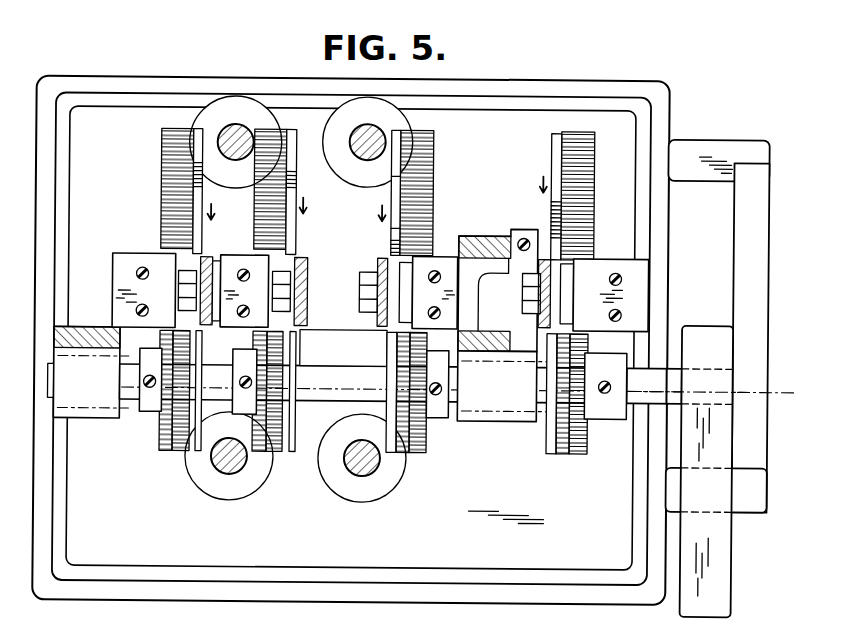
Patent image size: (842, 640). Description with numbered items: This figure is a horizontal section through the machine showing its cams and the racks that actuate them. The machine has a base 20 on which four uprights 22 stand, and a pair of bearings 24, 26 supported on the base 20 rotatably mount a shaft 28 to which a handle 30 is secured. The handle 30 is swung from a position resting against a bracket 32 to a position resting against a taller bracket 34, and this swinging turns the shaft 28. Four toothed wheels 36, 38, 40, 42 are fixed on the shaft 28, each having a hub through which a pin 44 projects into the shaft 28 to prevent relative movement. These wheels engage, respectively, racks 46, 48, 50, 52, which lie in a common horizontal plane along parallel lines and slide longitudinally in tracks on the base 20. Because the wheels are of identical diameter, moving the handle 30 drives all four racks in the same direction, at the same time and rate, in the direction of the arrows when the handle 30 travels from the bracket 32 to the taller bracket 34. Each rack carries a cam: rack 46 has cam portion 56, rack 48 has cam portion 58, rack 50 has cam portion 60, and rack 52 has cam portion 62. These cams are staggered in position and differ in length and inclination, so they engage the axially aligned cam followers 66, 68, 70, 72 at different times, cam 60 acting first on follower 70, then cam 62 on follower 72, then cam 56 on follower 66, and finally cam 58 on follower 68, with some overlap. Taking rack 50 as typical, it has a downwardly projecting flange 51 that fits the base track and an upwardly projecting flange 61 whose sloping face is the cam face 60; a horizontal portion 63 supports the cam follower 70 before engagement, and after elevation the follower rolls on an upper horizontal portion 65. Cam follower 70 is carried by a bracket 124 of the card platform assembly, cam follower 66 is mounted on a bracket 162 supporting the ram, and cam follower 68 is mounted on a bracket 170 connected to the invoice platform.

The base 20 is at (116, 600).
The uprights 22 is at (236, 126).
The bearing 24 is at (100, 412).
The bearing 26 is at (497, 412).
The shaft 28 is at (636, 402).
The handle 30 is at (728, 585).
The bracket 32 is at (762, 494).
The taller bracket 34 is at (760, 166).
The toothed wheel 36 is at (160, 432).
The toothed wheel 38 is at (268, 448).
The toothed wheel 40 is at (418, 438).
The toothed wheel 42 is at (578, 440).
The pin 44 is at (143, 383).
The rack 46 is at (165, 162).
The rack 48 is at (286, 232).
The rack 50 is at (431, 183).
The downwardly projecting flange 51 is at (396, 360).
The rack 52 is at (592, 192).
The cam portion 56 is at (201, 190).
The cam portion 58 is at (295, 182).
The cam portion 60 is at (390, 252).
The upwardly projecting flange 61 is at (390, 176).
The cam portion 62 is at (552, 222).
The horizontal portion 63 is at (396, 368).
The upper horizontal portion 65 is at (390, 228).
The cam follower 66 is at (184, 293).
The cam follower 68 is at (278, 296).
The cam follower 70 is at (401, 294).
The cam follower 72 is at (568, 295).
The bracket 124 is at (379, 324).
The bracket 162 is at (206, 258).
The bracket 170 is at (305, 322).